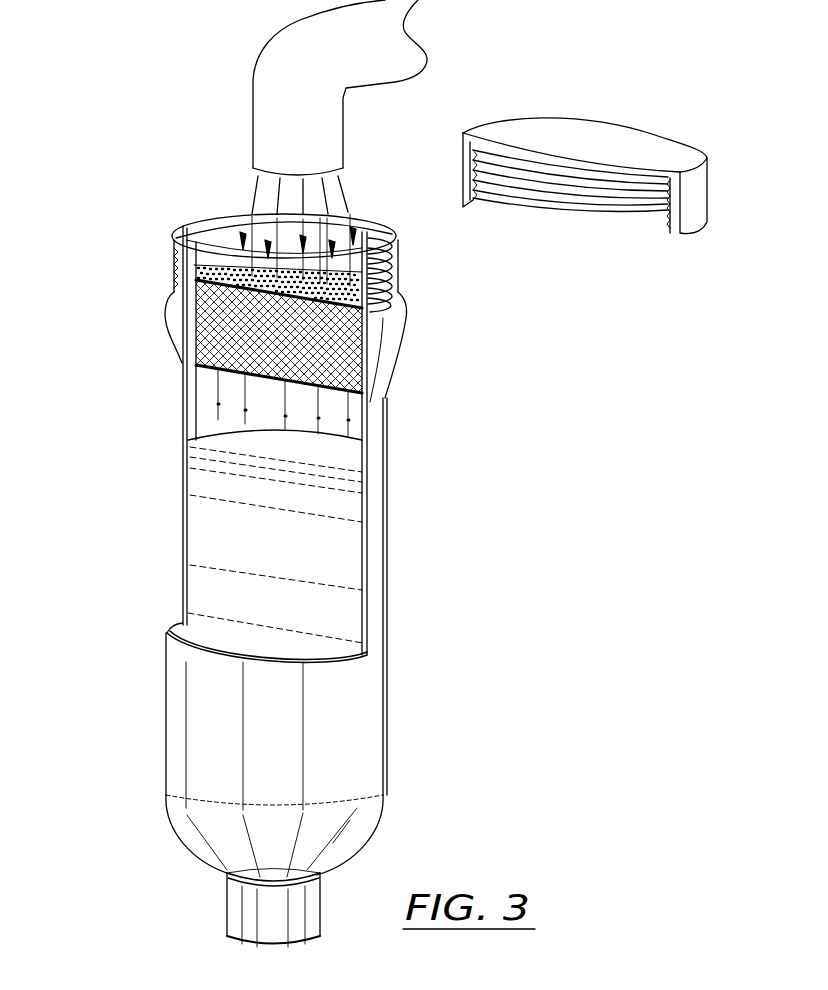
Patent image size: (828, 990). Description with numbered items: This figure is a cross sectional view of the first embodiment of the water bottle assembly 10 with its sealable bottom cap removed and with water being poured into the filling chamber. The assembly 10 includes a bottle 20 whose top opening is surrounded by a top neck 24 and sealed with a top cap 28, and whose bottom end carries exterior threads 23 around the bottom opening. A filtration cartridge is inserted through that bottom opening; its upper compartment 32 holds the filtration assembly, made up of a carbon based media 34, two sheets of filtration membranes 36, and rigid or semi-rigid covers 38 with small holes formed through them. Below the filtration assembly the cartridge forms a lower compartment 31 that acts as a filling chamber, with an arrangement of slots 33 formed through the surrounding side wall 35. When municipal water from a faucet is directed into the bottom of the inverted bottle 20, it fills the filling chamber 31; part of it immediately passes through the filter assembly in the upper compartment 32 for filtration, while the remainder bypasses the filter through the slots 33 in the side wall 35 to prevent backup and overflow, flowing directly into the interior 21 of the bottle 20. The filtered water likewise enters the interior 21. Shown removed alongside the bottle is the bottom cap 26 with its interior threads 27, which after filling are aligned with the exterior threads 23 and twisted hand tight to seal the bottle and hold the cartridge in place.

The assembly 10 is at (462, 632).
The bottle 20 is at (386, 568).
The interior 21 is at (285, 552).
The exterior threads 23 is at (400, 284).
The top neck 24 is at (320, 870).
The bottom cap 26 is at (615, 140).
The interior threads 27 is at (555, 178).
The top cap 28 is at (227, 912).
The lower compartment 31 is at (177, 246).
The upper compartment 32 is at (378, 368).
The slots 33 is at (207, 222).
The carbon based media 34 is at (182, 318).
The side wall 35 is at (180, 272).
The filtration membranes 36 is at (182, 376).
The covers 38 is at (180, 415).